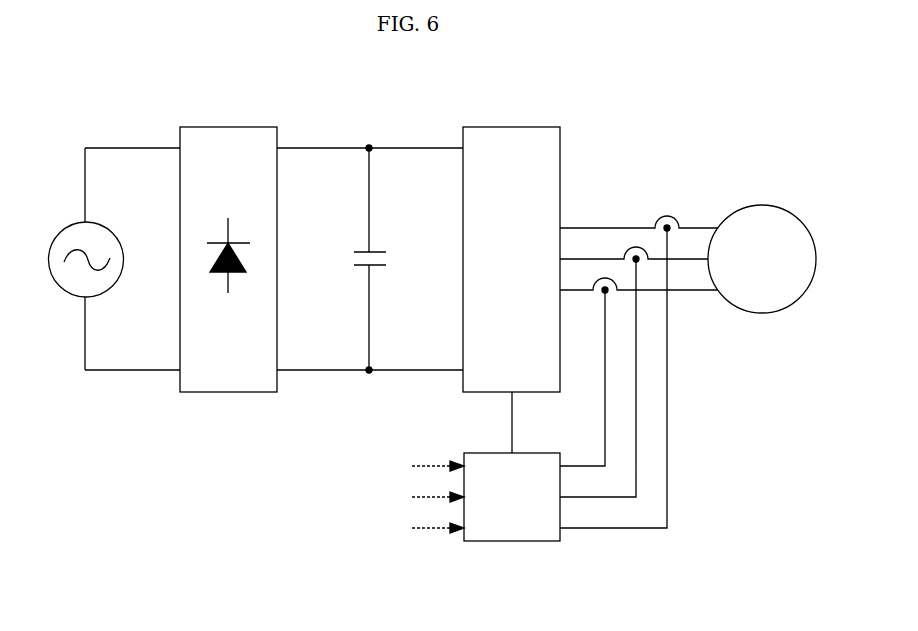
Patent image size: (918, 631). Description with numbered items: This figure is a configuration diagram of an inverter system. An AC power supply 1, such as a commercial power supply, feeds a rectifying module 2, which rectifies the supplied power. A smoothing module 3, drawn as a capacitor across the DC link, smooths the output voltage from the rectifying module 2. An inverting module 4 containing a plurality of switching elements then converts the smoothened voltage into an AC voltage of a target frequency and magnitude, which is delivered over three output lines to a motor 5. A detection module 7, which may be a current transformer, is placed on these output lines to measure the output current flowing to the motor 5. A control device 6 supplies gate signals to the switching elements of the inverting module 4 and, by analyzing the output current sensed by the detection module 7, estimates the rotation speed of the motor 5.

The AC power supply 1 is at (48, 258).
The rectifying module 2 is at (228, 126).
The smoothing module 3 is at (377, 251).
The inverting module 4 is at (511, 126).
The motor 5 is at (761, 204).
The control device 6 is at (512, 543).
The detection module 7 is at (669, 231).